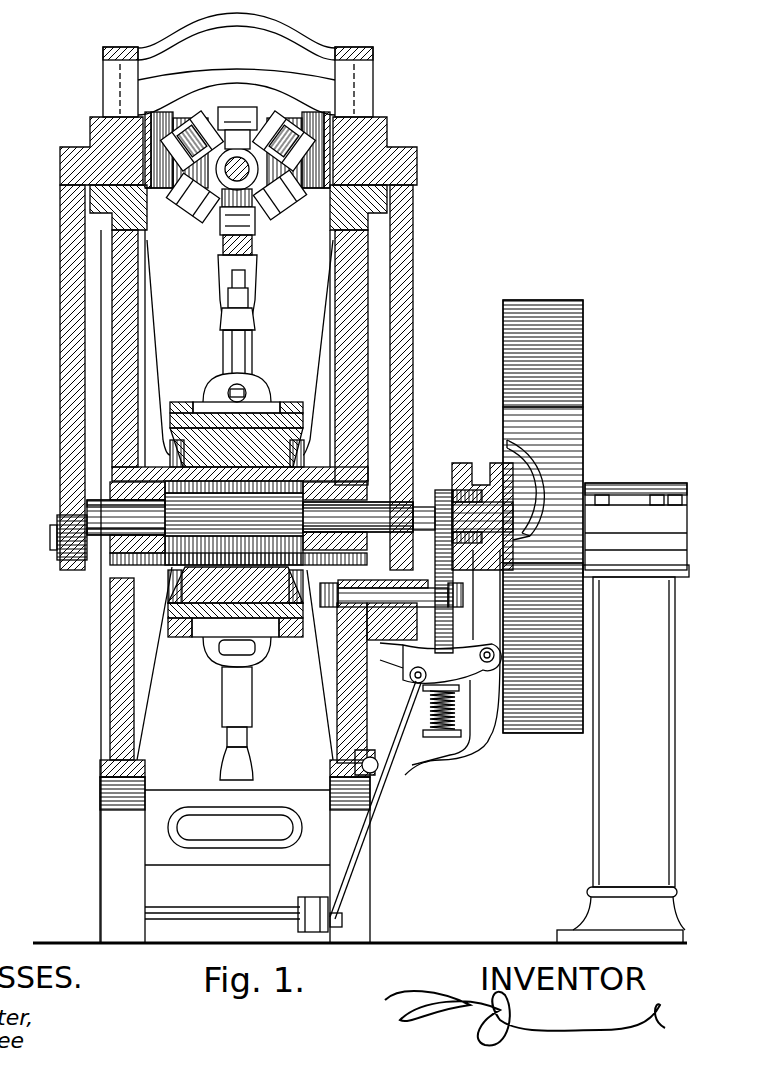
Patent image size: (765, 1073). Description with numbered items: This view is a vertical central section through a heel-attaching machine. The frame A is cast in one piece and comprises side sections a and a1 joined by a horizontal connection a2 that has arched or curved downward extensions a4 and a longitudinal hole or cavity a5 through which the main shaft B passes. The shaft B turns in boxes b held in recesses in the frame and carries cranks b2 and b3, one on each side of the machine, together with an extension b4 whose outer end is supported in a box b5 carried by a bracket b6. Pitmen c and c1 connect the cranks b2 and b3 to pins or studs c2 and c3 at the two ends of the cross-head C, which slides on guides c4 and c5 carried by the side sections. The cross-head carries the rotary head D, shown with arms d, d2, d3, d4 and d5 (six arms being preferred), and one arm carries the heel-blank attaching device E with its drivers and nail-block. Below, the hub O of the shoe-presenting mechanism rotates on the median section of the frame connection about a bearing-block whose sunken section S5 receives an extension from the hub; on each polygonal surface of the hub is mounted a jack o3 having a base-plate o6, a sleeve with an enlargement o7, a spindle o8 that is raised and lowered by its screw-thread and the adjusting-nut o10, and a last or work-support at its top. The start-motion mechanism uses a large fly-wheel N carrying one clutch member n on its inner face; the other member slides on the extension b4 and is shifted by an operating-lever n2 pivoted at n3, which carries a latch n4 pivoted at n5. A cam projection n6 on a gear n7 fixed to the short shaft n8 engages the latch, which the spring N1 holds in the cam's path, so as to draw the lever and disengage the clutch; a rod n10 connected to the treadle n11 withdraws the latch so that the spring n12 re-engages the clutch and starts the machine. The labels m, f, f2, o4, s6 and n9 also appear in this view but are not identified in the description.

The arched top plate m is at (237, 20).
The guide c4 is at (120, 82).
The guide c5 is at (353, 84).
The pin or stud c2 is at (62, 170).
The pin or stud c3 is at (416, 172).
The pitman c is at (64, 310).
The pitman c1 is at (413, 330).
The cross-head C is at (207, 130).
The rotary head D is at (245, 152).
The arm of rotary head d is at (182, 168).
The arm of rotary head d2 is at (193, 212).
The arm of rotary head d3 is at (252, 220).
The arm of rotary head d4 is at (282, 185).
The arm of rotary head d5 is at (300, 136).
The valve spring f is at (184, 220).
The valve spring f2 is at (174, 208).
The heel-blank attaching device E is at (220, 242).
The spindle o8 is at (250, 300).
The base-plate o6 is at (255, 322).
The hub O is at (247, 372).
The enlargement o7 is at (214, 372).
The piston stud o4 is at (184, 402).
The jack o3 is at (196, 412).
The ball joint s6 is at (262, 405).
The horizontal connection a2 is at (170, 440).
The longitudinal hole or cavity a5 is at (305, 455).
The side section a is at (110, 679).
The side section a1 is at (338, 700).
The downward extension a4 is at (170, 575).
The frame A is at (110, 644).
The shaft B is at (105, 494).
The box b is at (130, 553).
The crank b2 is at (58, 545).
The crank b3 is at (412, 500).
The shaft extension b4 is at (480, 490).
The box b5 is at (628, 485).
The bracket b6 is at (621, 760).
The sunken section S5 is at (222, 585).
The adjusting-nut o10 is at (237, 652).
The fly-wheel N is at (553, 508).
The spring N1 is at (428, 712).
The clutch member n is at (462, 558).
The operating-lever n2 is at (452, 662).
The pivot n3 is at (372, 752).
The latch n4 is at (497, 490).
The latch pivot n5 is at (440, 663).
The cam projection n6 is at (434, 664).
The gear n7 is at (455, 605).
The short shaft n8 is at (333, 600).
The pinion gear n9 is at (444, 490).
The rod n10 is at (392, 790).
The treadle n11 is at (308, 896).
The spring n12 is at (462, 466).